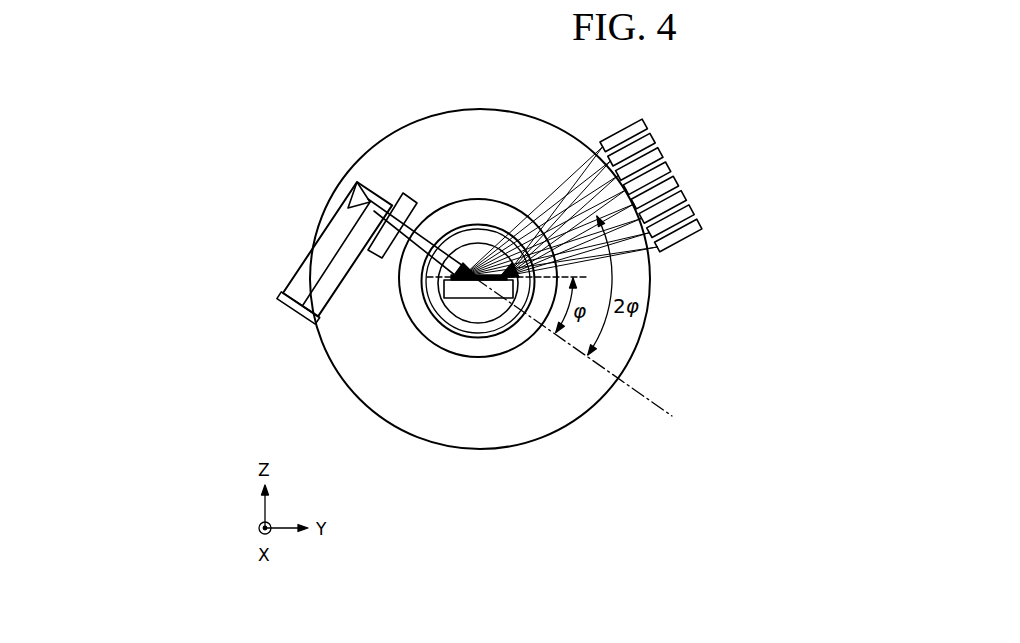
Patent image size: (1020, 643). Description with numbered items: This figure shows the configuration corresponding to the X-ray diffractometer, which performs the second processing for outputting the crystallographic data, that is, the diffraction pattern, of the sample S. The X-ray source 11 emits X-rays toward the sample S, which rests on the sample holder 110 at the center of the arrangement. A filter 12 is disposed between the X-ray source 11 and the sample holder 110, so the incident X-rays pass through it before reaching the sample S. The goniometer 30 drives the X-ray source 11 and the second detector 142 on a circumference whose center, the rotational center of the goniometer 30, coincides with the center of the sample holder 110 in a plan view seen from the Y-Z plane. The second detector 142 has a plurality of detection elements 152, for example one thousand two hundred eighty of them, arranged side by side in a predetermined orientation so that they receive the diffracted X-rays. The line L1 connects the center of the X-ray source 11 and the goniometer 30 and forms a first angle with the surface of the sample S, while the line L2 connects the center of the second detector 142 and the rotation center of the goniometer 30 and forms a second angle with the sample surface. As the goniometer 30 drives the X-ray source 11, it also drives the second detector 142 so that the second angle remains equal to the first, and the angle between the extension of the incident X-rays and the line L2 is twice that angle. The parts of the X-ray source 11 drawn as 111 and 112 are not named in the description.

The X-ray source 11 is at (327, 226).
The end cap of X-ray tube 111 is at (298, 319).
The target (anode) of X-ray tube 112 is at (370, 200).
The filter 12 is at (413, 199).
The goniometer 30 is at (585, 413).
The sample holder 110 is at (487, 295).
The second detector 142 is at (652, 172).
The detection elements 152 is at (646, 122).
The sample S is at (463, 280).
The line connecting the center of the X-ray source and the goniometer L1 is at (417, 233).
The line connecting the center of the second detector and the rotation center of the L2 is at (585, 217).